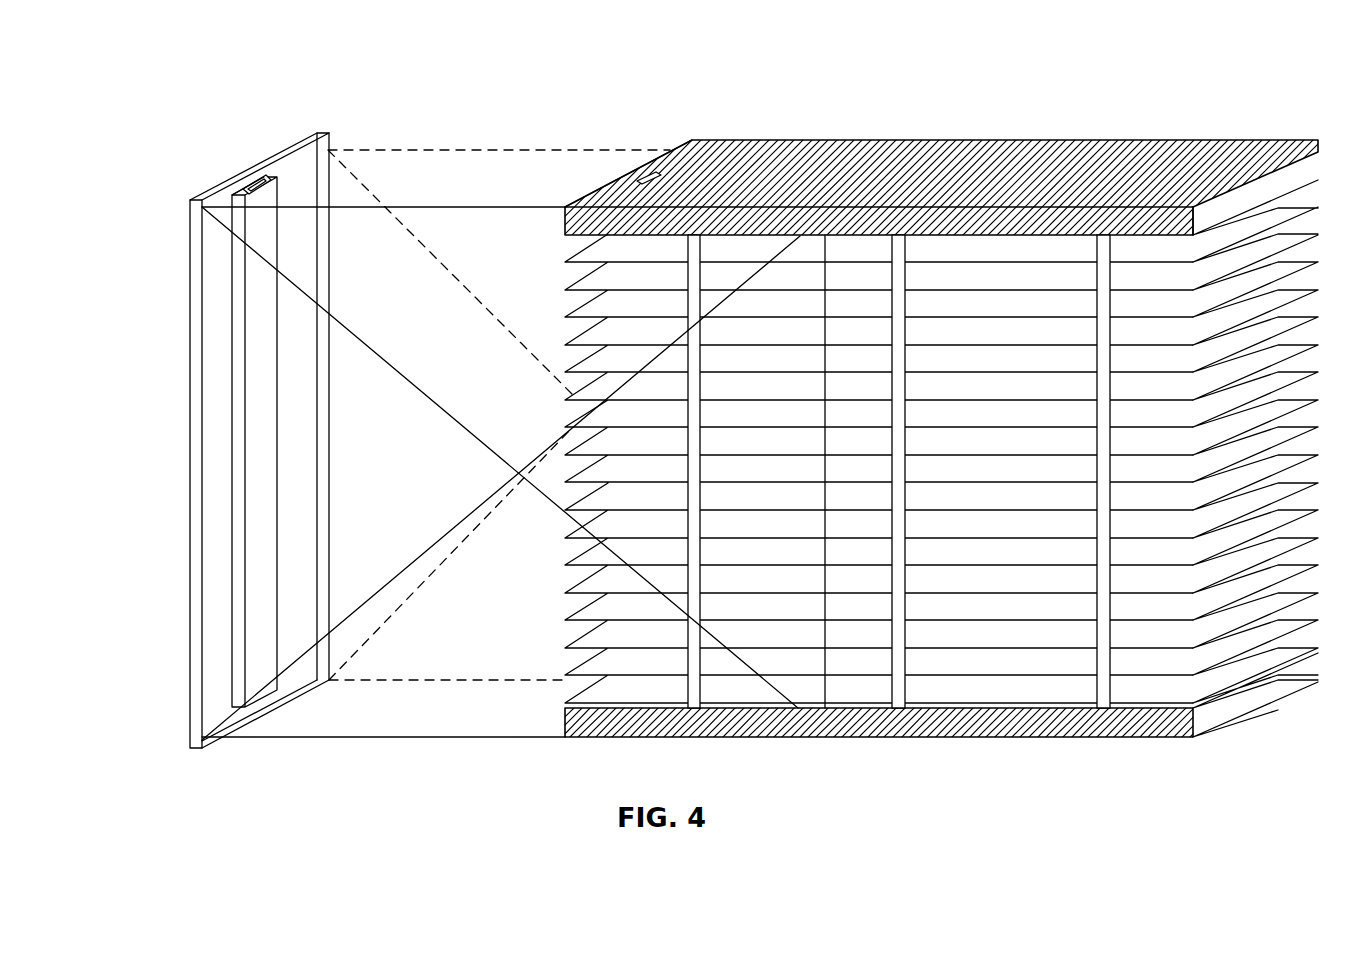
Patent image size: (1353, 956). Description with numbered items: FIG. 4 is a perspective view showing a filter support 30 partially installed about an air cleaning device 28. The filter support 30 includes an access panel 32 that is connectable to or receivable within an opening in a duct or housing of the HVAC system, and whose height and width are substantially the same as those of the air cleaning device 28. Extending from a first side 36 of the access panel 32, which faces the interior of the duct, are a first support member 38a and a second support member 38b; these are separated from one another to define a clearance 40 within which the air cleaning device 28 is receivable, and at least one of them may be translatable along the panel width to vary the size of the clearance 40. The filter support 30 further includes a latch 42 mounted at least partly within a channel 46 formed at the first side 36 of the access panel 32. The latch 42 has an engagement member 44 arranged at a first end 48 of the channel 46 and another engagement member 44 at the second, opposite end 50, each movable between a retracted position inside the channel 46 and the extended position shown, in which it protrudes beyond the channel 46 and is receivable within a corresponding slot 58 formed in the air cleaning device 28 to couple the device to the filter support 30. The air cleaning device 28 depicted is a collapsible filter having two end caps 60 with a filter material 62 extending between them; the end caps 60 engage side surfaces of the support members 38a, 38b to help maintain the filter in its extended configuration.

The air cleaning device 28 is at (1050, 115).
The filter support 30 is at (130, 176).
The access panel 32 is at (190, 500).
The first side 36 is at (290, 162).
The first support member 38a is at (515, 150).
The second support member 38b is at (410, 695).
The clearance 40 is at (560, 170).
The latch 42 is at (233, 172).
The engagement member 44 is at (258, 190).
The channel 46 is at (258, 385).
The first end 48 is at (255, 220).
The second end 50 is at (265, 690).
The slot 58 is at (645, 174).
The end caps 60 is at (900, 160).
The filter material 62 is at (980, 633).